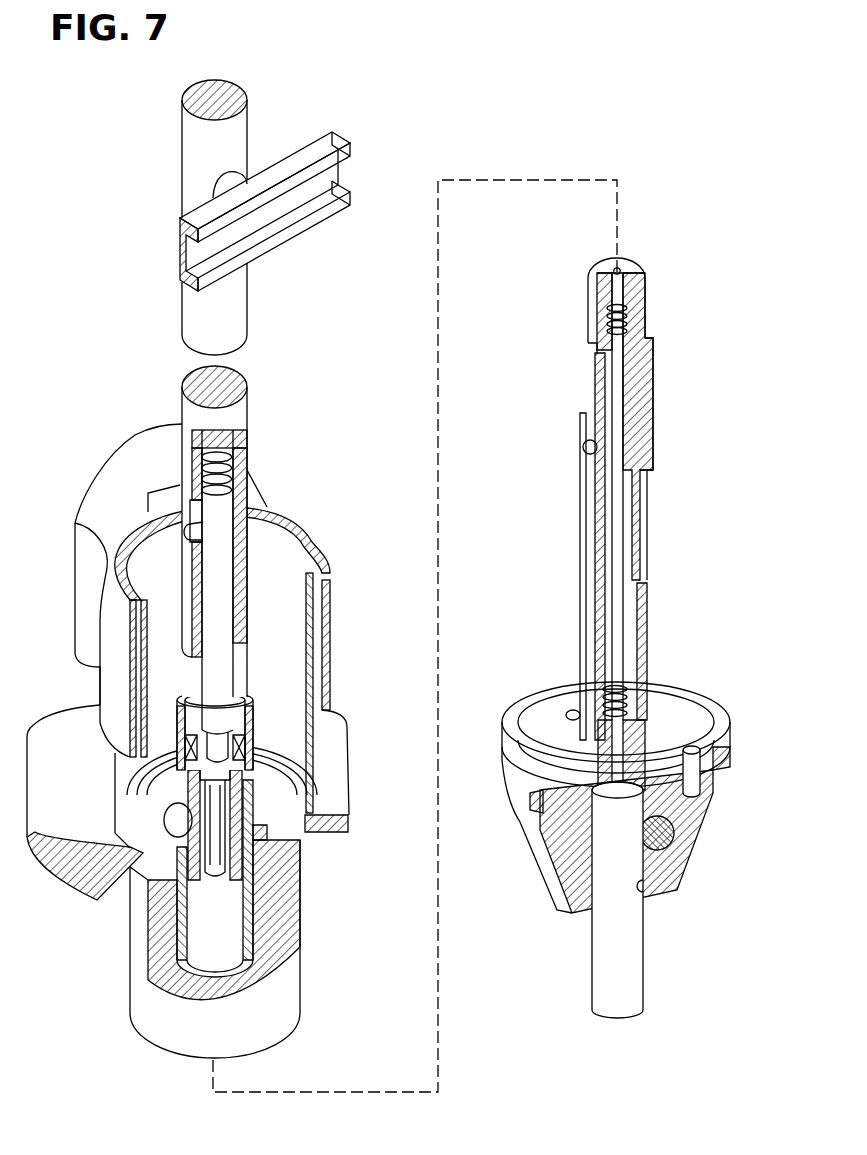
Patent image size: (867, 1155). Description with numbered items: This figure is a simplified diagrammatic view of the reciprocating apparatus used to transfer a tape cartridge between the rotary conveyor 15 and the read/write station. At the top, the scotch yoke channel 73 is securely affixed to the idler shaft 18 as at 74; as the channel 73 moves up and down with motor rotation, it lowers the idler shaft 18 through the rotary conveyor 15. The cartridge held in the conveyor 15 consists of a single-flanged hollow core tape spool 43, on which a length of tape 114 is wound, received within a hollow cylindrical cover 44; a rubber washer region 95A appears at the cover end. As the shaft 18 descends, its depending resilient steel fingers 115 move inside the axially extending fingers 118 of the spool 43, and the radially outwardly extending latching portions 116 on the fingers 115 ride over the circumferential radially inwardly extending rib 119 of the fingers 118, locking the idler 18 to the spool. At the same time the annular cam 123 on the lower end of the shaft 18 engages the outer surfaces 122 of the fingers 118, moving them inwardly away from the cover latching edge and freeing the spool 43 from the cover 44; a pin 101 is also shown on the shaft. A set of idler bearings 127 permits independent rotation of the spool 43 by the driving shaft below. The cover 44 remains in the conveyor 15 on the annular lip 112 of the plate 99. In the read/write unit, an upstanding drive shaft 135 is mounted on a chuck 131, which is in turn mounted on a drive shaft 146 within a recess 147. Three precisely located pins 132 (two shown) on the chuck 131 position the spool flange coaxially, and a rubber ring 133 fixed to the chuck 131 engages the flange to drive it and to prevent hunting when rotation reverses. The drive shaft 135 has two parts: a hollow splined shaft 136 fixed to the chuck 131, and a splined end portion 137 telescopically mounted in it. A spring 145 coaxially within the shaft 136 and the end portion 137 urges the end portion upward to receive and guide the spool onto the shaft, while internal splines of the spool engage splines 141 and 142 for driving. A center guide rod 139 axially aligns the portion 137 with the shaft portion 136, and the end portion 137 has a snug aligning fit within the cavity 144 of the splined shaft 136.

The rotary conveyor 15 is at (82, 495).
The idler shaft 18 is at (246, 95).
The hollow core tape spool 43 is at (267, 890).
The hollow cylindrical cover 44 is at (120, 592).
The scotch yoke channel 73 is at (333, 137).
The affixing point of channel to idler arm 74 is at (228, 185).
The recess 95A is at (112, 633).
The plate 99 is at (87, 886).
The pin 101 is at (163, 498).
The annular lip 112 is at (347, 828).
The tape 114 is at (250, 947).
The resilient steel fingers 115 is at (258, 807).
The latching portions 116 is at (237, 867).
The axially extending fingers 118 is at (187, 820).
The circumferential rib 119 is at (268, 857).
The outer surfaces of fingers 122 is at (253, 785).
The annular cam 123 is at (255, 770).
The idler bearings 127 is at (240, 714).
The chuck 131 is at (703, 837).
The pins 132 is at (570, 703).
The rubber ring 133 is at (683, 700).
The upstanding drive shaft 135 is at (560, 473).
The splined shaft 136 is at (576, 549).
The splined end portion 137 is at (652, 305).
The center guide rod 139 is at (619, 269).
The splines 141 is at (655, 385).
The splines 142 is at (583, 440).
The cavity 144 is at (634, 640).
The spring 145 is at (630, 680).
The drive shaft 146 is at (644, 962).
The recess 147 is at (641, 887).